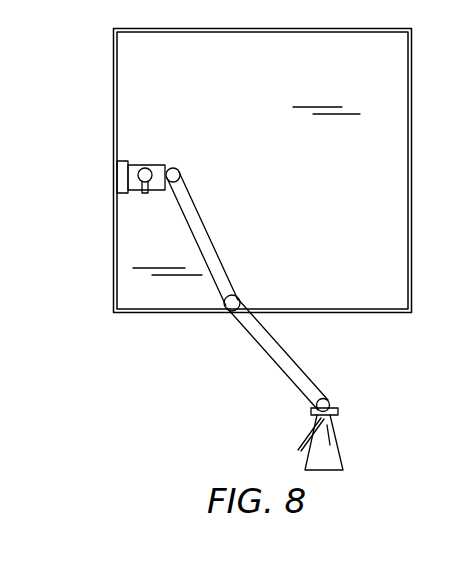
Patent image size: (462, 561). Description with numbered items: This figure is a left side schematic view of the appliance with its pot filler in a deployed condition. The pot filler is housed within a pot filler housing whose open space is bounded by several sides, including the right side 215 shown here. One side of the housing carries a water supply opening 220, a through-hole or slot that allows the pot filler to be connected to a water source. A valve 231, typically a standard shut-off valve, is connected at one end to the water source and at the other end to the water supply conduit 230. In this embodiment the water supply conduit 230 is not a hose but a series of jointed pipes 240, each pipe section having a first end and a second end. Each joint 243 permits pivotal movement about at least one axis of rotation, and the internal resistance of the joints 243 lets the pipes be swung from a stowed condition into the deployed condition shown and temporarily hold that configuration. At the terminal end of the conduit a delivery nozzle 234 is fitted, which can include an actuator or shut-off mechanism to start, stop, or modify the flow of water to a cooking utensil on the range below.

The right side 215 is at (378, 252).
The water supply opening 220 is at (124, 161).
The valve 231 is at (143, 165).
The water supply conduit 230 is at (278, 269).
The jointed pipes 240 is at (211, 233).
The joint 243 is at (178, 170).
The delivery nozzle 234 is at (342, 447).